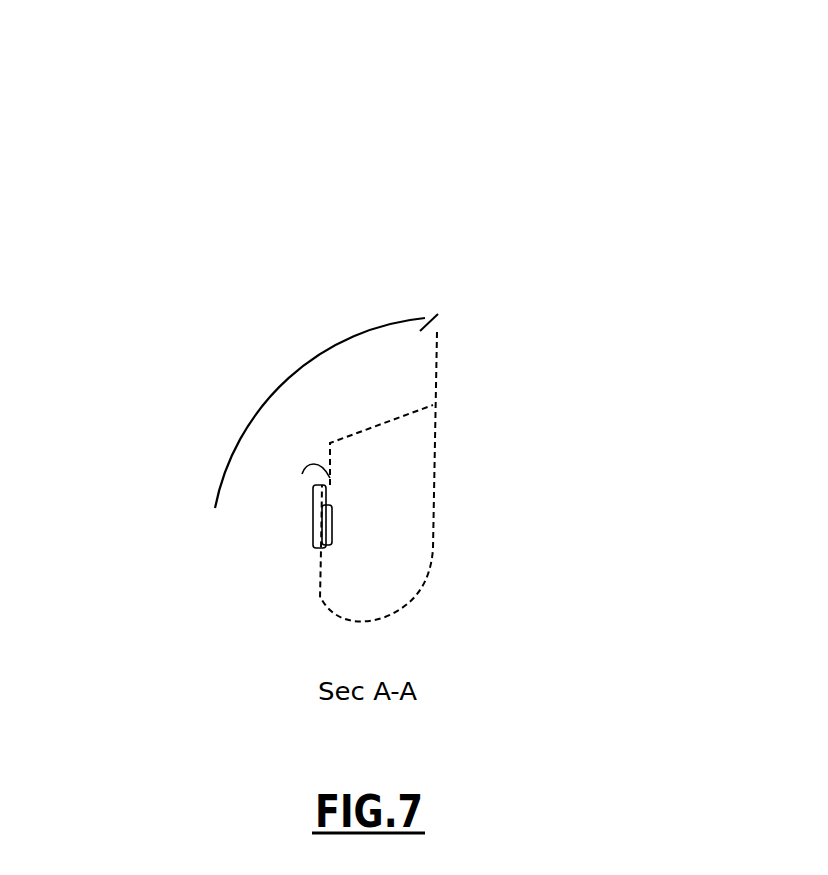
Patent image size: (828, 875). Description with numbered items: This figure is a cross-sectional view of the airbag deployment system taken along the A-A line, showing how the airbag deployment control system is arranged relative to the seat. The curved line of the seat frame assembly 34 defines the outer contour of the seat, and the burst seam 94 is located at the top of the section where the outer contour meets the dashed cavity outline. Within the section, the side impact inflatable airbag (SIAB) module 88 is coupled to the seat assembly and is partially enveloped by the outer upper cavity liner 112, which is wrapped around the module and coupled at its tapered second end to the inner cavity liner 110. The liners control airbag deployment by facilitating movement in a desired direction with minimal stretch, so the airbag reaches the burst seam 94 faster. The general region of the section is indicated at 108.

The seat frame assembly 34 is at (250, 335).
The burst seam 94 is at (412, 312).
The section assembly 108 is at (420, 205).
The inner cavity liner 110 is at (393, 412).
The outer upper cavity liner 112 is at (449, 462).
The side impact inflatable airbag (SIAB) module 88 is at (410, 549).